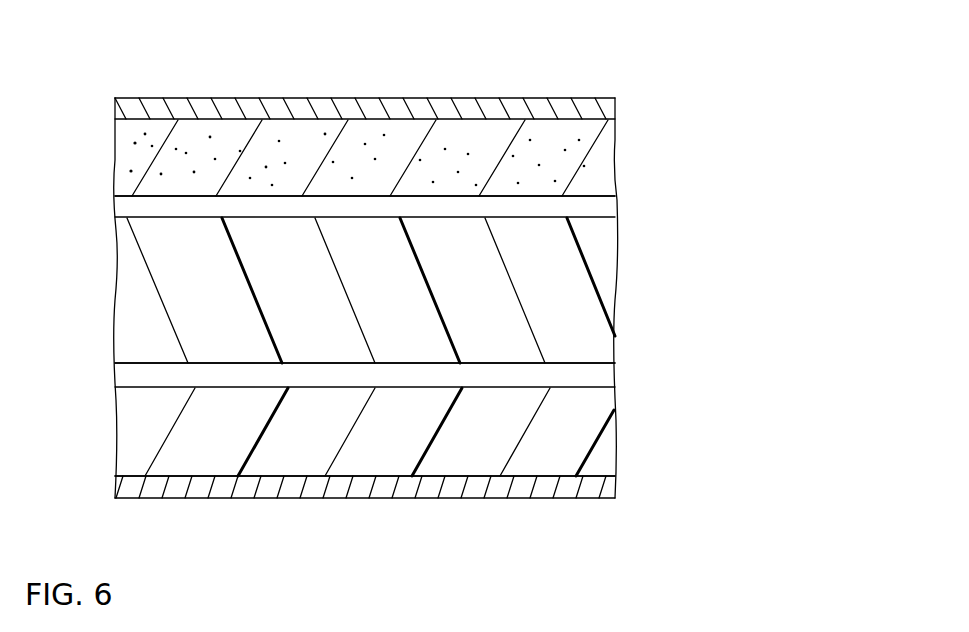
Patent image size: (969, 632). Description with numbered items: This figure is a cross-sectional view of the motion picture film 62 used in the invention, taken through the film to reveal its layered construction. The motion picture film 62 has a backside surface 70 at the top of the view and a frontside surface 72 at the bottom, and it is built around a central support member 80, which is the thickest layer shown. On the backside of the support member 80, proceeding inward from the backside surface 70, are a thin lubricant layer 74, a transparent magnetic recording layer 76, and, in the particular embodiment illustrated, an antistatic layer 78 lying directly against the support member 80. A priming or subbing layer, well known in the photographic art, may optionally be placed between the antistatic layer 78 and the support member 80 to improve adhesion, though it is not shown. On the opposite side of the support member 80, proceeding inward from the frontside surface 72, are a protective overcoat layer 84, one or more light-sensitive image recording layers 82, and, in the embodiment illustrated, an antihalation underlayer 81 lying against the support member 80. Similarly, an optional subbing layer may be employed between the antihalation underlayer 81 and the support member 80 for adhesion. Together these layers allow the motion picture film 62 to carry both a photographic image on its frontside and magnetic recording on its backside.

The motion picture film 62 is at (130, 78).
The backside surface 70 is at (572, 98).
The frontside surface 72 is at (551, 500).
The thin lubricant layer 74 is at (600, 110).
The transparent magnetic recording layer 76 is at (603, 170).
The antistatic layer 78 is at (603, 207).
The support member 80 is at (603, 272).
The antihalation underlayer 81 is at (605, 380).
The light-sensitive image recording layer(s) 82 is at (604, 432).
The protective overcoat layer 84 is at (600, 489).